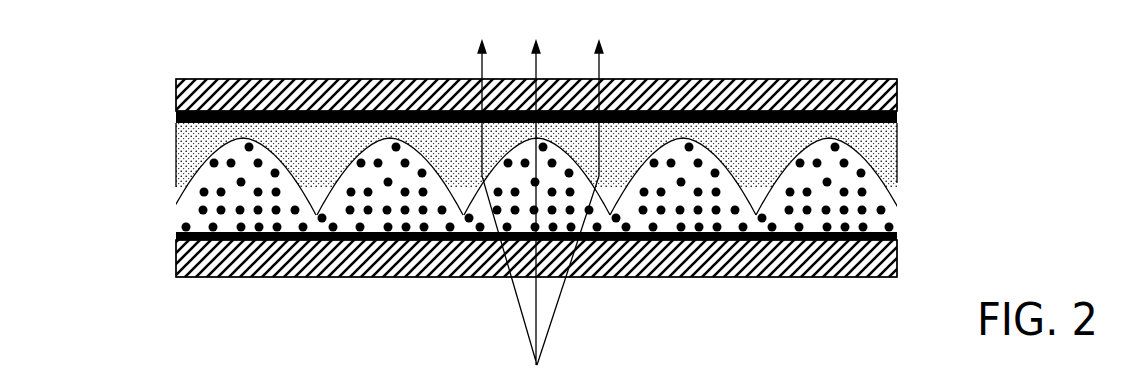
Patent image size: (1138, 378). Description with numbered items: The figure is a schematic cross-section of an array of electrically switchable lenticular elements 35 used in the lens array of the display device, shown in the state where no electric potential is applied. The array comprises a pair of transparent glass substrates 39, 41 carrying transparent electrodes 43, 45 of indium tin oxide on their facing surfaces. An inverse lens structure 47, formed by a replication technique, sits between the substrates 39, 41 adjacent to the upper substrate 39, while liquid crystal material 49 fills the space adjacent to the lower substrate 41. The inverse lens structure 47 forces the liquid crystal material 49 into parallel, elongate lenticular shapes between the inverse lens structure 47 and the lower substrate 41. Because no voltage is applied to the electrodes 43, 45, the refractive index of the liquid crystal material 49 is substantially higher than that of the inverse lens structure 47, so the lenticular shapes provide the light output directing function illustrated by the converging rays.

The electrically switchable lenticular elements 35 is at (413, 142).
The transparent glass substrate 39 is at (897, 118).
The transparent glass substrate 41 is at (176, 257).
The transparent electrode 43 is at (176, 91).
The transparent electrode 45 is at (883, 236).
The inverse lens structure 47 is at (176, 135).
The liquid crystal material 49 is at (860, 192).